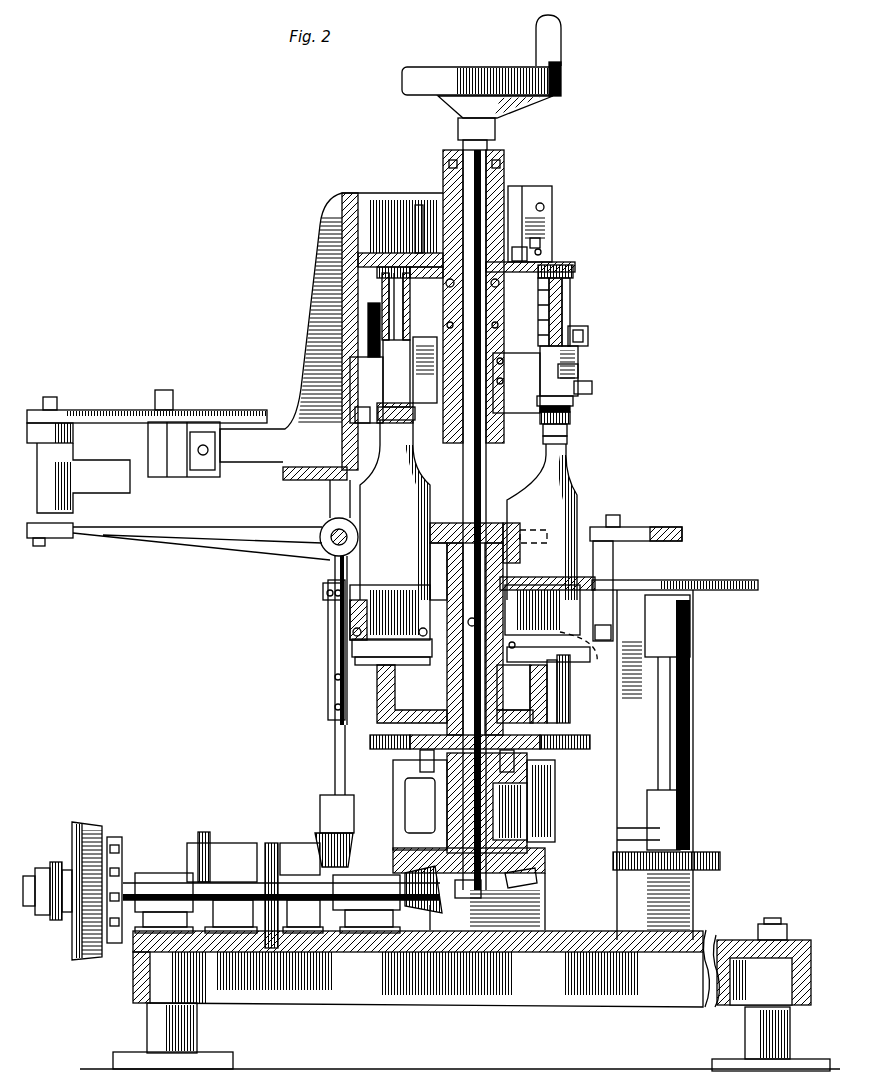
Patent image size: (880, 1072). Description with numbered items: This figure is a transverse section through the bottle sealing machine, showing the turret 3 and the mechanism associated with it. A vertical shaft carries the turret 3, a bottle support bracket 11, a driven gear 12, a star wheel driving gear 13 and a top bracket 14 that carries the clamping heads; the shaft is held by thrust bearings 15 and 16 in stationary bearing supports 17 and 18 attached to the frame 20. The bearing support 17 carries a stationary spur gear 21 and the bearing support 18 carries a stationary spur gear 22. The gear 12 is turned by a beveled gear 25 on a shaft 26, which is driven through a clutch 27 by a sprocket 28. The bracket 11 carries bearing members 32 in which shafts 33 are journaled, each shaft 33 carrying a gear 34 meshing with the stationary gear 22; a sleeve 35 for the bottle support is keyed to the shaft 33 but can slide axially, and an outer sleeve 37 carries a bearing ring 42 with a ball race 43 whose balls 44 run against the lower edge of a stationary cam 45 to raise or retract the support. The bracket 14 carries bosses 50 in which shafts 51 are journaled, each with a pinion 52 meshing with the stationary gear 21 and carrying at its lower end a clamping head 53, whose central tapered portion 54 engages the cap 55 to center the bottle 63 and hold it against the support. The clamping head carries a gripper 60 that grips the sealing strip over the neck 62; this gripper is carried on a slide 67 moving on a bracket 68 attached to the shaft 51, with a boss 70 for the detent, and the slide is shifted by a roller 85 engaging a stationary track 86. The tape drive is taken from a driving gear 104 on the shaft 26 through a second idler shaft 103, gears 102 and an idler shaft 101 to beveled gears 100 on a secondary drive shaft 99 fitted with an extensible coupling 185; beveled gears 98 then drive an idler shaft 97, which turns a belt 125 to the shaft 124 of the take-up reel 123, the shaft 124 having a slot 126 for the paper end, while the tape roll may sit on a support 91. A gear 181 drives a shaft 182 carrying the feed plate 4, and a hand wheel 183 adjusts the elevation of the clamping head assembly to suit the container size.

The hand wheel 183 is at (452, 78).
The frame 20 is at (388, 215).
The stationary spur gear 21 is at (418, 253).
The bearing support 17 is at (510, 205).
The thrust bearing 15 is at (540, 258).
The pinion 52 is at (570, 270).
The top bracket 14 is at (560, 292).
The boss 50 is at (565, 300).
The shaft 51 is at (565, 316).
The roller 85 is at (590, 332).
The slide 67 is at (585, 348).
The turret 3 is at (578, 371).
The boss 70 is at (592, 386).
The clamping head 53 is at (573, 398).
The gripper 60 is at (571, 408).
The central tapered portion 54 is at (571, 418).
The cap 55 is at (568, 430).
The neck 62 is at (566, 448).
The bottle 63 is at (580, 478).
The bracket 68 is at (516, 383).
The stationary track 86 is at (393, 363).
The slot 126 is at (55, 398).
The shaft 124 is at (55, 412).
The take-up reel 123 is at (70, 416).
The support 91 is at (225, 420).
The beveled gears 98 is at (322, 530).
The idler shaft 97 is at (331, 540).
The secondary drive shaft 99 is at (334, 572).
The outer sleeve 37 is at (325, 592).
The stationary cam 45 is at (352, 620).
The ball race 43 is at (352, 634).
The balls 44 is at (355, 646).
The bearing ring 42 is at (358, 660).
The extensible coupling 185 is at (333, 677).
The bearing member 32 is at (378, 710).
The gear 34 is at (380, 740).
The bottle support bracket 11 is at (515, 694).
The shaft 33 is at (560, 704).
The thrust bearing 16 is at (570, 728).
The sleeve 35 is at (600, 580).
The feed plate 4 is at (736, 584).
The shaft 182 is at (680, 742).
The gear 181 is at (705, 855).
The clutch 27 is at (92, 830).
The sprocket 28 is at (118, 838).
The gears 102 is at (195, 845).
The shaft 26 is at (212, 880).
The second idler shaft 103 is at (245, 850).
The idler shaft 101 is at (268, 848).
The driving gear 104 is at (280, 855).
The beveled gears 100 is at (335, 860).
The stationary spur gear 22 is at (425, 790).
The bearing support 18 is at (490, 815).
The star wheel driving gear 13 is at (530, 860).
The driven gear 12 is at (532, 884).
The beveled gear 25 is at (440, 900).
The belt 125 is at (150, 540).